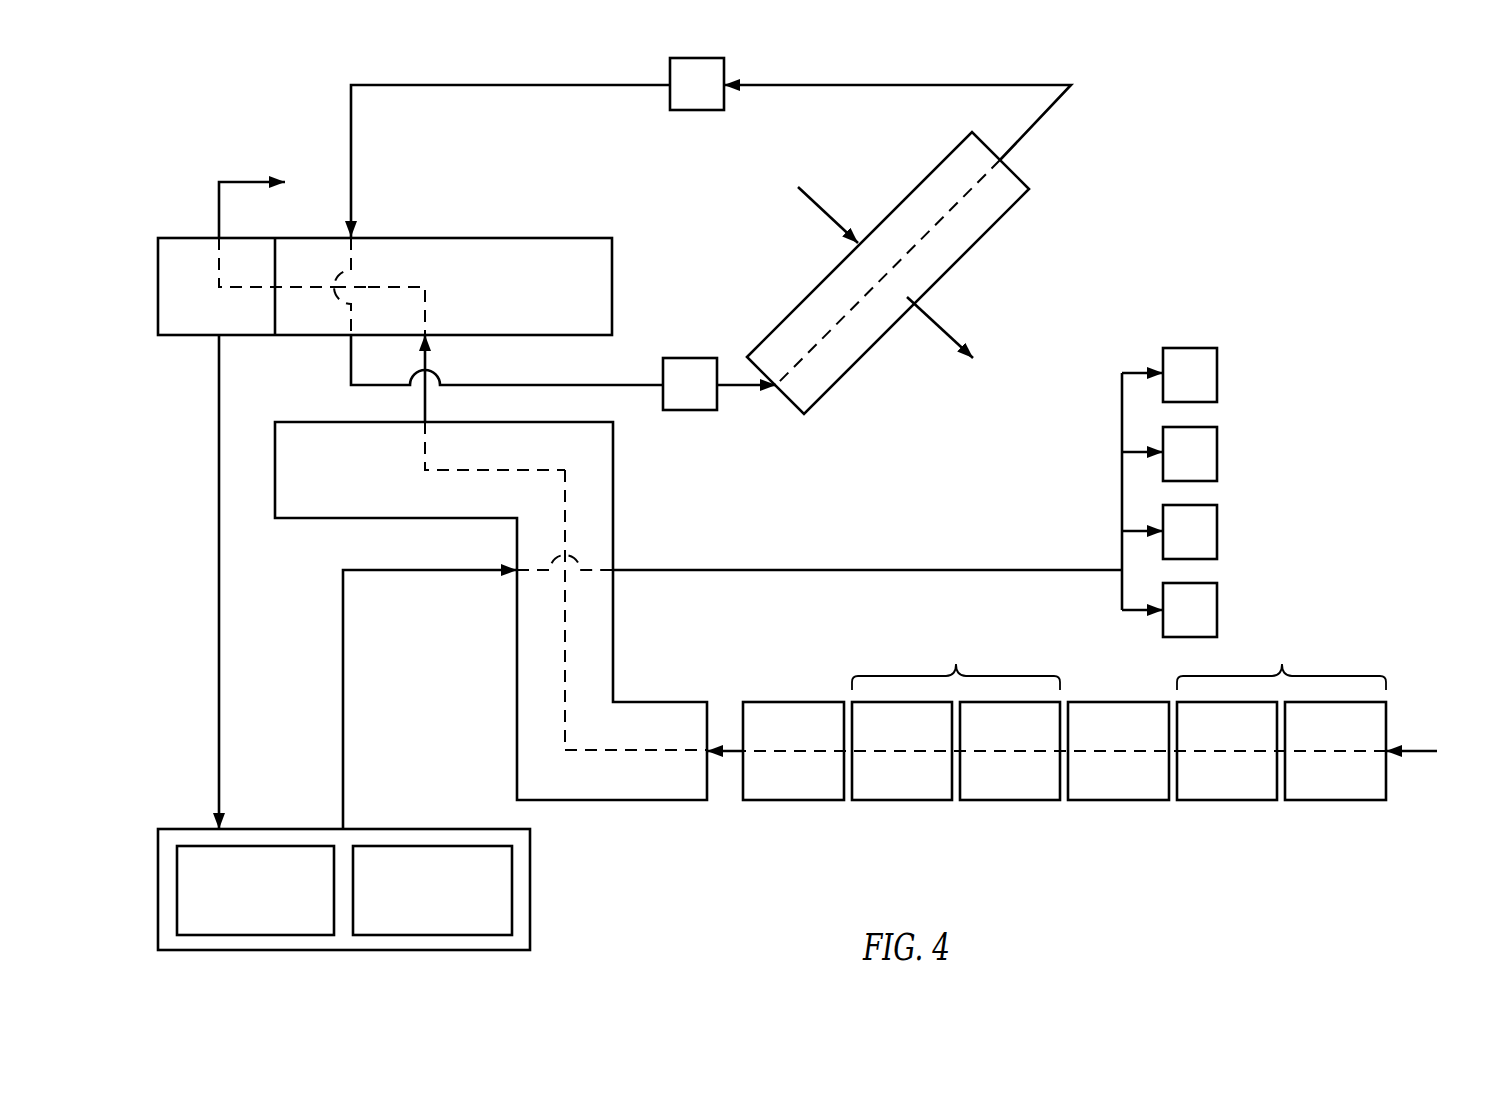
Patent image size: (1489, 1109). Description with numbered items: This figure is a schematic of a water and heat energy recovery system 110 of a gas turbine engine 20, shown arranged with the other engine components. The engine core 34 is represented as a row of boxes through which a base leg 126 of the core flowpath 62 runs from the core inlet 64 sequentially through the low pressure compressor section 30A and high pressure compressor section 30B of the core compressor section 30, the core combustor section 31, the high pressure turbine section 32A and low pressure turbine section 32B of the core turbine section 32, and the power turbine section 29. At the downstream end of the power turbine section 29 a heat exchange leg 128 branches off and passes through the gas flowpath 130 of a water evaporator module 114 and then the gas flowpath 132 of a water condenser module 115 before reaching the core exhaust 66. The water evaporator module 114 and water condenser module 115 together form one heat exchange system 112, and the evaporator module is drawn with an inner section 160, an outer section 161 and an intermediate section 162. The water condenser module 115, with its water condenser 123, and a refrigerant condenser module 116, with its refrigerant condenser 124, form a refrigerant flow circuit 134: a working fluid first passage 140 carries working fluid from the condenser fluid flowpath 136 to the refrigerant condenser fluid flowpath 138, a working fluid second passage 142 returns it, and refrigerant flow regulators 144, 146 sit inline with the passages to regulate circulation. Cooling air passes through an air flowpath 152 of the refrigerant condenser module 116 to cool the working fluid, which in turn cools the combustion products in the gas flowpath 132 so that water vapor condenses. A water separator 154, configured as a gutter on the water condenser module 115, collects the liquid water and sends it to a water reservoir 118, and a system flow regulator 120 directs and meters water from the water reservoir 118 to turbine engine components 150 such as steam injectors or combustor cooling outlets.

The gas turbine engine 20 is at (1322, 128).
The power turbine section 29 is at (806, 745).
The core compressor section 30 is at (1281, 659).
The low pressure compressor section 30A is at (1355, 745).
The high pressure compressor section 30B is at (1247, 745).
The core combustor section 31 is at (1131, 745).
The core turbine section 32 is at (956, 658).
The high pressure turbine section 32A is at (1030, 745).
The low pressure turbine section 32B is at (922, 745).
The turbine engine core 34 is at (1070, 812).
The core flowpath 62 is at (887, 753).
The core inlet 64 is at (1437, 751).
The core exhaust 66 is at (285, 182).
The water and heat energy recovery system 110 is at (1195, 212).
The heat exchange system 112 is at (612, 222).
The water evaporator module 114 is at (613, 481).
The water condenser module 115 is at (388, 235).
The refrigerant condenser module 116 is at (887, 316).
The water reservoir 118 is at (276, 920).
The system flow regulator 120 is at (453, 920).
The water condenser 123 is at (475, 232).
The refrigerant condenser 124 is at (858, 371).
The base leg 126 is at (937, 755).
The heat exchange leg 128 is at (565, 628).
The gas flowpath of the water evaporator module 130 is at (565, 680).
The gas flowpath of the water condenser module 132 is at (388, 287).
The refrigerant flow circuit 134 is at (1085, 79).
The working fluid flowpath of the water condenser module 136 is at (340, 310).
The working fluid flowpath of the refrigerant condenser module 138 is at (947, 213).
The working fluid first passage 140 is at (613, 385).
The working fluid second passage 142 is at (522, 85).
The refrigerant flow regulator 144 is at (704, 402).
The refrigerant flow regulator 146 is at (711, 100).
The turbine engine component 150 is at (1204, 390).
The air flowpath of the refrigerant condenser module 152 is at (897, 282).
The water separator 154 is at (158, 293).
The inner section 160 is at (627, 800).
The outer section 161 is at (390, 520).
The intermediate section 162 is at (613, 677).